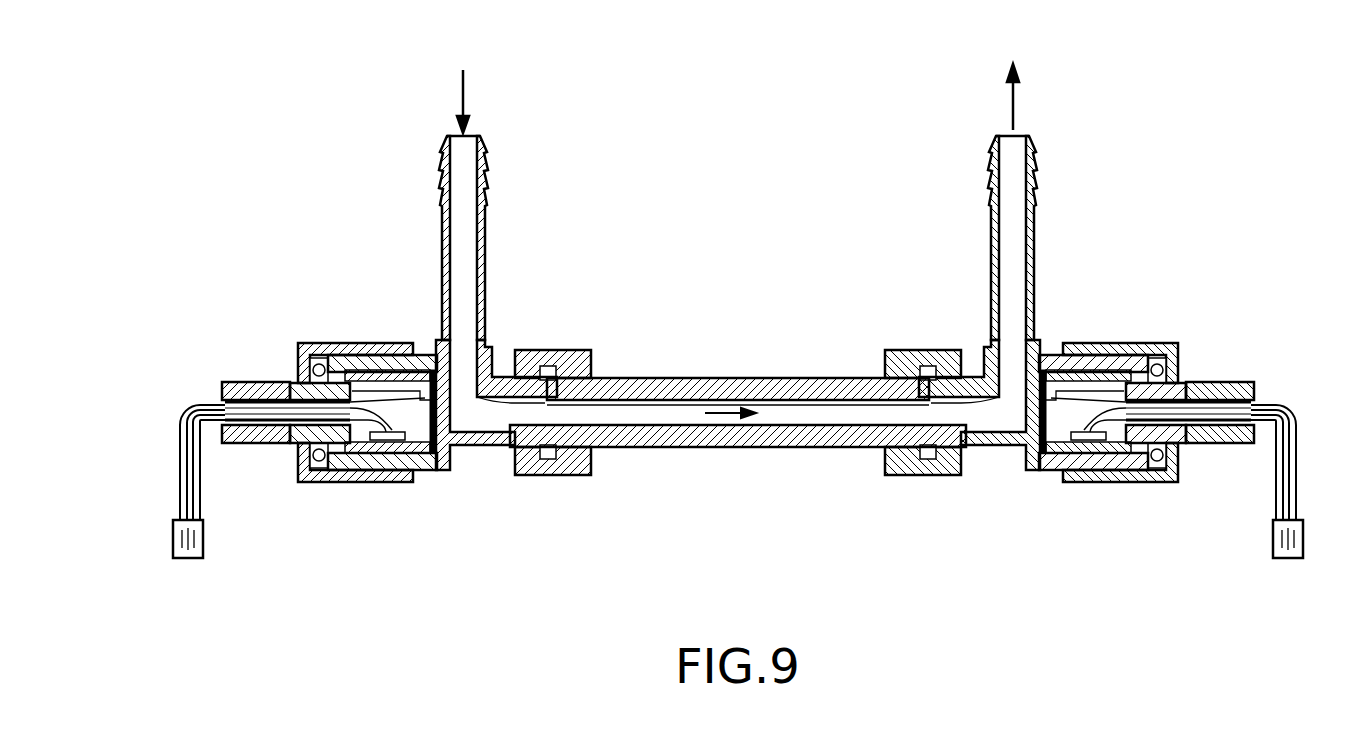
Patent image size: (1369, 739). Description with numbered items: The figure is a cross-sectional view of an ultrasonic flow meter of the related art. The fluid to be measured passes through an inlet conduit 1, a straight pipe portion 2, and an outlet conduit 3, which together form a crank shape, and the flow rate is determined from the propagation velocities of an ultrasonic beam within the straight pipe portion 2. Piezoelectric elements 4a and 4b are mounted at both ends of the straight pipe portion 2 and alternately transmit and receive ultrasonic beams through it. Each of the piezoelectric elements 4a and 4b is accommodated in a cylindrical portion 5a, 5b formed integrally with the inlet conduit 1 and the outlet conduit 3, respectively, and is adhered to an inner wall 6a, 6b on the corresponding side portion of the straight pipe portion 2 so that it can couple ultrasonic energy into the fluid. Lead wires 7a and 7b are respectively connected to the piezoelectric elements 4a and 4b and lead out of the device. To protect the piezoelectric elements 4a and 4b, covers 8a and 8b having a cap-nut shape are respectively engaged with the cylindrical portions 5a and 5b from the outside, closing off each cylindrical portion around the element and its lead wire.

The inlet conduit 1 is at (443, 188).
The straight pipe portion 2 is at (714, 382).
The outlet conduit 3 is at (1037, 176).
The piezoelectric element 4a is at (470, 448).
The piezoelectric element 4b is at (998, 448).
The cylindrical portion 5a is at (357, 362).
The cylindrical portion 5b is at (1140, 363).
The inner wall 6a is at (451, 391).
The inner wall 6b is at (1027, 387).
The lead wire 7a is at (188, 408).
The lead wire 7b is at (1287, 417).
The cover 8a is at (307, 343).
The cover 8b is at (1177, 347).